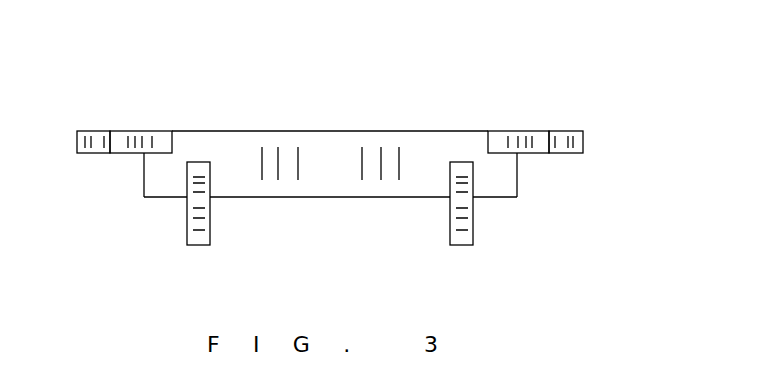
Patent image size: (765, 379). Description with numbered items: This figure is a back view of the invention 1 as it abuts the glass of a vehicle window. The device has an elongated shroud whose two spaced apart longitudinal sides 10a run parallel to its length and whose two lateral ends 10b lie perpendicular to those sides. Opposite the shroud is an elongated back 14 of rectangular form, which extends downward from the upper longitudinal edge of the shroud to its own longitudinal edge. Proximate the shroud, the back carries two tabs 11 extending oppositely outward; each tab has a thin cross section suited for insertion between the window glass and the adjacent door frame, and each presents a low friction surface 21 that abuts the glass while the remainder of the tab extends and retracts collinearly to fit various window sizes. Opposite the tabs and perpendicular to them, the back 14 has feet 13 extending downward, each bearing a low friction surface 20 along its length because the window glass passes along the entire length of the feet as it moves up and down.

The invention 1 is at (129, 84).
The longitudinal sides 10a is at (360, 132).
The lateral ends 10b is at (145, 175).
The tab 11 is at (77, 145).
The feet 13 is at (193, 246).
The back 14 is at (291, 147).
The low friction surface 20 is at (195, 215).
The low friction surface 21 is at (153, 132).